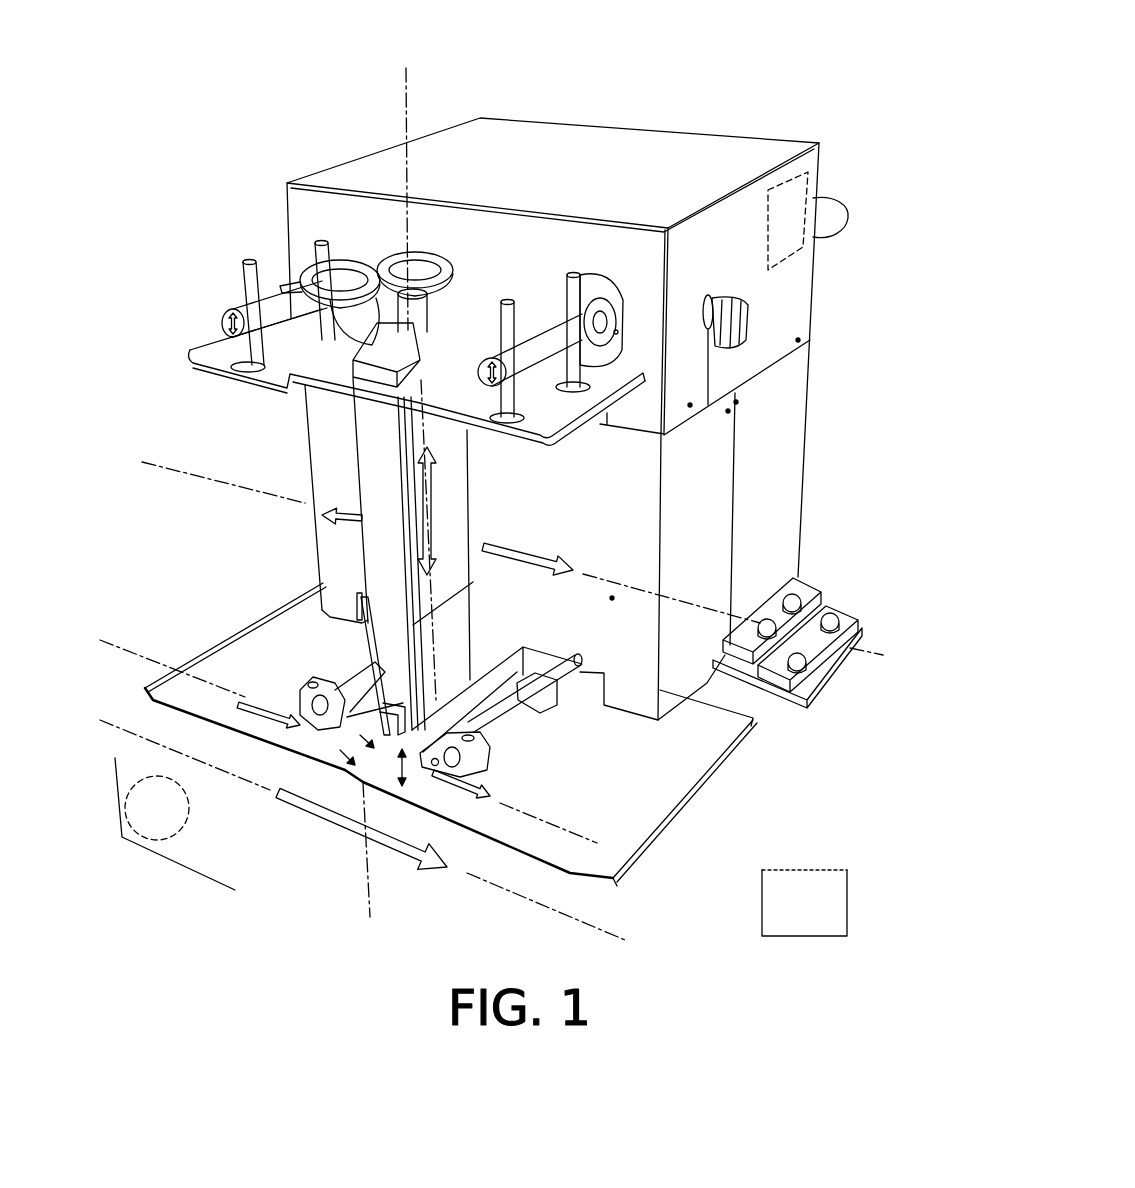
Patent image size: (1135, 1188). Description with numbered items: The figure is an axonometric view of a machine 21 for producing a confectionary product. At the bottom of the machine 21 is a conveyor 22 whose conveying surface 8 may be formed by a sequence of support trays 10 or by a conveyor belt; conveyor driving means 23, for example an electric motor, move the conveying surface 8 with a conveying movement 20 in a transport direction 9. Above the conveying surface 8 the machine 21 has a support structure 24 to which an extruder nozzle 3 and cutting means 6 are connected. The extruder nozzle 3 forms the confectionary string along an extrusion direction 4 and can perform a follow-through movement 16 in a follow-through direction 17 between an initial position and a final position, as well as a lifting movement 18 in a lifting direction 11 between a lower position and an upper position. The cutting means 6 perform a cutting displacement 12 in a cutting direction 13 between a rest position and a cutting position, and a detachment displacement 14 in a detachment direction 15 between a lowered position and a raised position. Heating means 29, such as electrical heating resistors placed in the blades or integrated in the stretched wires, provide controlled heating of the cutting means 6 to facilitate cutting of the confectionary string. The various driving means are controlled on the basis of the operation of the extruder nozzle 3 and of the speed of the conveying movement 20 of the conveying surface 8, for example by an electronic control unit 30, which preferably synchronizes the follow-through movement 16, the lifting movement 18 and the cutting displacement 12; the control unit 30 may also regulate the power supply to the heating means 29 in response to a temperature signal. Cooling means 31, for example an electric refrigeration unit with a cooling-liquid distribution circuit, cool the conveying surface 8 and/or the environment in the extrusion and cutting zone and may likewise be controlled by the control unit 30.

The machine 21 is at (778, 114).
The extrusion direction 4 is at (408, 110).
The lifting direction 11 is at (410, 190).
The lifting movement 18 is at (225, 318).
The electronic control unit 30 is at (788, 199).
The follow-through movement 16 is at (523, 553).
The follow-through direction 17 is at (200, 478).
The detachment direction 15 is at (347, 653).
The support structure 24 is at (843, 620).
The heating means 29 is at (303, 672).
The support trays 10 is at (270, 638).
The cutting direction 13 is at (207, 683).
The extruder nozzle 3 is at (452, 680).
The conveyor driving means 23 is at (125, 777).
The conveying surface 8 is at (617, 753).
The cutting means 6 is at (457, 713).
The cooling means 31 is at (810, 878).
The detachment displacement 14 is at (350, 757).
The cutting displacement 12 is at (263, 707).
The conveyor 22 is at (147, 830).
The conveying movement 20 is at (345, 828).
The transport direction 9 is at (627, 940).